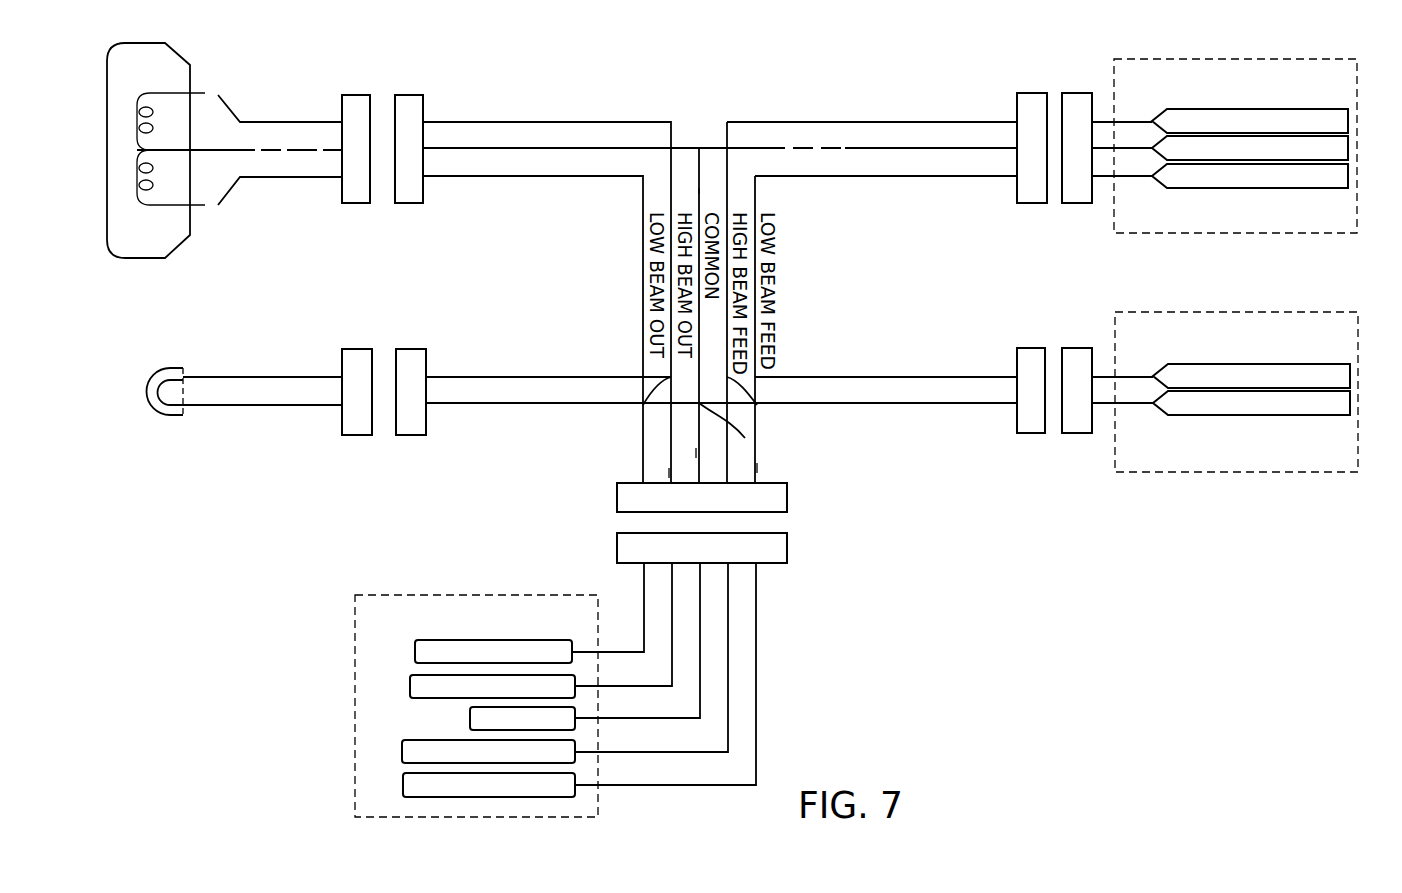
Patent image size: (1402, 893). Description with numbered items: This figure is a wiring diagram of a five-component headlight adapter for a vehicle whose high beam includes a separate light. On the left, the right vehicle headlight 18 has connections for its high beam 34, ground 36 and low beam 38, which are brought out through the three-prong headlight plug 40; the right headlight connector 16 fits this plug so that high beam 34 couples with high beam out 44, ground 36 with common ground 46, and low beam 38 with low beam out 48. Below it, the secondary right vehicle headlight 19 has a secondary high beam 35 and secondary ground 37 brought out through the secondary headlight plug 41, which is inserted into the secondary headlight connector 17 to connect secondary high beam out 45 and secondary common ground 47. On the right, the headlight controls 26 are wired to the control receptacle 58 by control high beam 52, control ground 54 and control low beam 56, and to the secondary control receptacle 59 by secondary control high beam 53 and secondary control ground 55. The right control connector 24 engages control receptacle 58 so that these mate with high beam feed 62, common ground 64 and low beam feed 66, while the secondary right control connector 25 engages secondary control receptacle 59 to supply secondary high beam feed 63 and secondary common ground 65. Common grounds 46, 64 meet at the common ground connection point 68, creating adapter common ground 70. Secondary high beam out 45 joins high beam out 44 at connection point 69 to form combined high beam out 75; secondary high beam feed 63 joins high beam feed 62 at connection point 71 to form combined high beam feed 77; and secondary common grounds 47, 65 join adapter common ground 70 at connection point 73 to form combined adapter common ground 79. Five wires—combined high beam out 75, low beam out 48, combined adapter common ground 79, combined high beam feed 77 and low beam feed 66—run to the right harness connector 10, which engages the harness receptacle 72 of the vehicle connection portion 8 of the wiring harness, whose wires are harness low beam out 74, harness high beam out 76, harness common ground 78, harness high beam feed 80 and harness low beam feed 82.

The vehicle connection portion 8 is at (355, 610).
The right harness connector 10 is at (787, 497).
The right headlight connector 16 is at (410, 94).
The secondary headlight connector 17 is at (410, 348).
The right vehicle headlight 18 is at (150, 259).
The secondary right vehicle headlight 19 is at (150, 416).
The right control connector 24 is at (1030, 93).
The secondary right control connector 25 is at (1032, 348).
The headlight controls 26 is at (1172, 59).
The high beam 34 is at (218, 95).
The secondary high beam 35 is at (229, 377).
The ground 36 is at (217, 150).
The secondary ground 37 is at (295, 406).
The low beam 38 is at (297, 179).
The headlight plug 40 is at (358, 204).
The secondary headlight plug 41 is at (360, 436).
The high beam out 44 is at (610, 120).
The secondary high beam out 45 is at (609, 376).
The common ground 46 is at (640, 148).
The secondary common ground 47 is at (553, 404).
The low beam out 48 is at (604, 178).
The control high beam 52 is at (1272, 108).
The secondary control high beam 53 is at (1272, 363).
The control ground 54 is at (1157, 143).
The secondary control ground 55 is at (1283, 415).
The control low beam 56 is at (1255, 188).
The control receptacle 58 is at (1077, 93).
The secondary control receptacle 59 is at (1077, 348).
The high beam feed 62 is at (810, 120).
The secondary high beam feed 63 is at (812, 376).
The common ground 64 is at (765, 146).
The secondary common ground 65 is at (925, 404).
The low beam feed 66 is at (841, 178).
The common ground connection point 68 is at (697, 146).
The connection point 69 is at (643, 405).
The adapter common ground 70 is at (699, 190).
The connection point 71 is at (758, 405).
The harness receptacle 72 is at (787, 548).
The connection point 73 is at (726, 432).
The harness low beam out 74 is at (415, 652).
The combined high beam out 75 is at (670, 473).
The harness high beam out 76 is at (410, 686).
The combined high beam feed 77 is at (757, 468).
The harness common ground 78 is at (470, 718).
The combined adapter common ground 79 is at (698, 453).
The harness high beam feed 80 is at (402, 752).
The harness low beam feed 82 is at (403, 785).